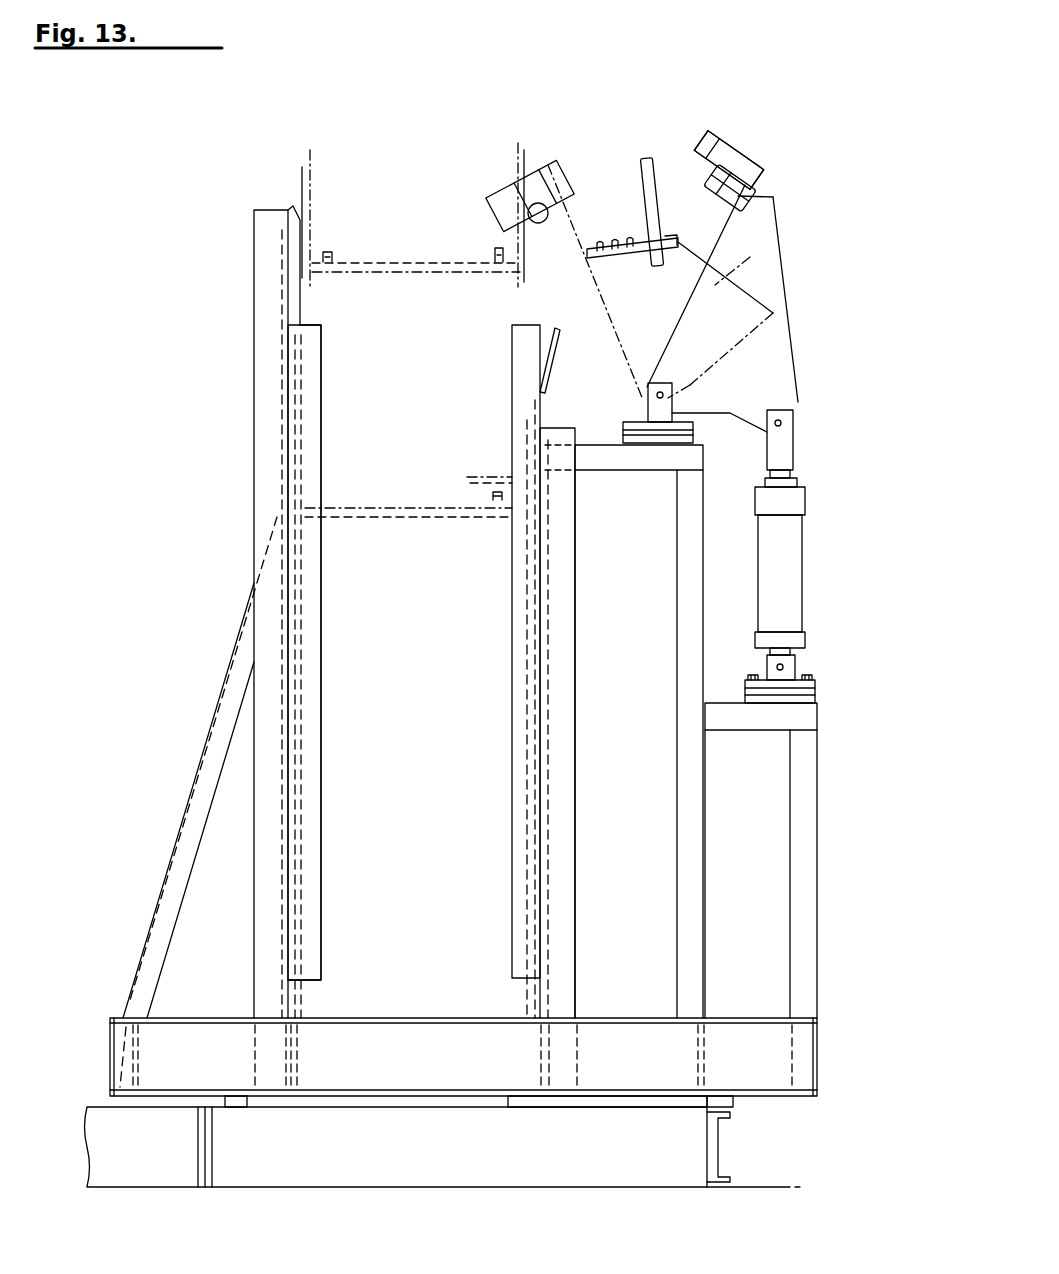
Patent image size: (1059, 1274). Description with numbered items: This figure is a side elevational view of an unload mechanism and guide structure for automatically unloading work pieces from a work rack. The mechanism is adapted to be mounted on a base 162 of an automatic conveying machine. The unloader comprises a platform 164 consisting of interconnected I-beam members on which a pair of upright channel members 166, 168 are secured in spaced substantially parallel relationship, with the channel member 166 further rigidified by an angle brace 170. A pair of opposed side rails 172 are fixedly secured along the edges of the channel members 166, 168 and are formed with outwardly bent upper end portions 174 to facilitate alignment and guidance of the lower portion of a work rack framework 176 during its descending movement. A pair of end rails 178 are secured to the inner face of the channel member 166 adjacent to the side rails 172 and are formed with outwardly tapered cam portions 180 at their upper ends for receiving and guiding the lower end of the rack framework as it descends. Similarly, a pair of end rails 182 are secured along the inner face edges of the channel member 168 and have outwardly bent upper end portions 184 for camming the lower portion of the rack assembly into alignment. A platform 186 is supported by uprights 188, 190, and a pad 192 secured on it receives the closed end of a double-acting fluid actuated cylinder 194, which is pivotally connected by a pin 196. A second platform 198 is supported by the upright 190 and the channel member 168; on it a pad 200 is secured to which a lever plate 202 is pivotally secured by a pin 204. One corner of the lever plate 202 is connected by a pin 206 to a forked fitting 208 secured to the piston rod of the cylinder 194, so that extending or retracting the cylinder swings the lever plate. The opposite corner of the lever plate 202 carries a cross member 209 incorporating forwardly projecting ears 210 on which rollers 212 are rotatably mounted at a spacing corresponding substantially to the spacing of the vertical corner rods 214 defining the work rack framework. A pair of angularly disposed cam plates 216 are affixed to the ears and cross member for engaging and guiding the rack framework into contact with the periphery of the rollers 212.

The base 162 is at (718, 1140).
The platform 164 is at (395, 1018).
The upright channel member 166 is at (262, 500).
The upright channel member 168 is at (567, 690).
The angle brace 170 is at (186, 812).
The side rails 172 is at (312, 843).
The outwardly bent upper end portions 174 is at (510, 353).
The work rack framework 176 is at (314, 218).
The end rails 178 is at (302, 312).
The outwardly tapered cam portions 180 is at (290, 208).
The end rails 182 is at (525, 652).
The outwardly bent upper end portions 184 is at (553, 352).
The platform 186 is at (803, 715).
The upright 188 is at (810, 837).
The upright 190 is at (697, 787).
The pad 192 is at (810, 692).
The double-acting fluid actuated cylinder 194 is at (815, 580).
The pin 196 is at (793, 667).
The second platform 198 is at (606, 462).
The pad 200 is at (700, 438).
The lever plate 202 is at (768, 250).
The pin 204 is at (665, 395).
The pin 206 is at (782, 423).
The forked fitting 208 is at (785, 450).
The cross member 209 is at (760, 190).
The ears 210 is at (773, 210).
The rollers 212 is at (760, 137).
The vertical corner rods 214 is at (520, 230).
The cam plates 216 is at (546, 145).